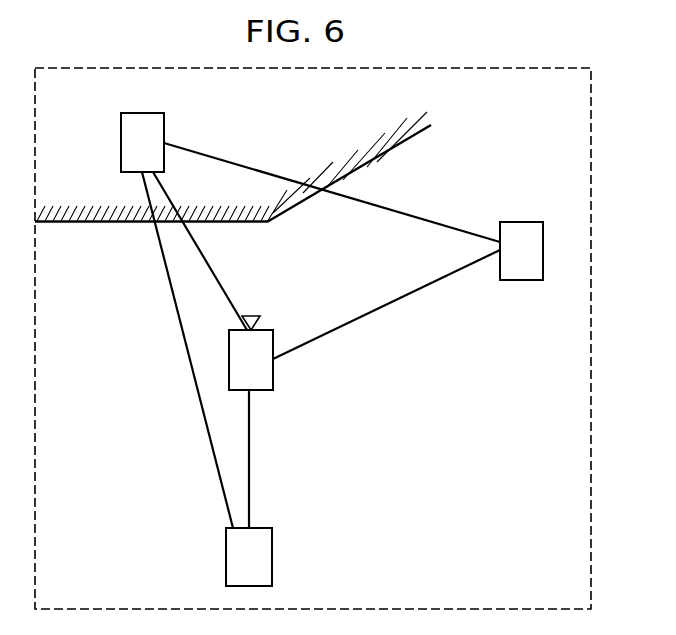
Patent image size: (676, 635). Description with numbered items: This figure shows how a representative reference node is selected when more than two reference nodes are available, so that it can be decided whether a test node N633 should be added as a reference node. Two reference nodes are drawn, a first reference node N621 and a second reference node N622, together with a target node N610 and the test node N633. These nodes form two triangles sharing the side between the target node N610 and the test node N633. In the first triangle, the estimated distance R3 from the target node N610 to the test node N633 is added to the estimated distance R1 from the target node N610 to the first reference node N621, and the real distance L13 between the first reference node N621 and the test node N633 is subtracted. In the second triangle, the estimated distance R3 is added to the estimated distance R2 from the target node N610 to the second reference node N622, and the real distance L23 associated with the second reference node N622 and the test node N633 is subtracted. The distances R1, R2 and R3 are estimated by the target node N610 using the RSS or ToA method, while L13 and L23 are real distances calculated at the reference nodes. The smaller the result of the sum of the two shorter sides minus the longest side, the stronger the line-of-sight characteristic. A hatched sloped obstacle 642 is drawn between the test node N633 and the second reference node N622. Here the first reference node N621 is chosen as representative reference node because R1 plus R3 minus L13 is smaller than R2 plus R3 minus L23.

The test node N633 is at (146, 113).
The second reference node N622 is at (524, 222).
The target node N610 is at (252, 323).
The first reference node N621 is at (260, 528).
The obstacle (sloped surface) 642 is at (449, 134).
The real distance L23 is at (460, 229).
The real distance L13 is at (200, 393).
The estimated distance R3 is at (212, 268).
The estimated distance R2 is at (411, 297).
The estimated distance R1 is at (250, 458).